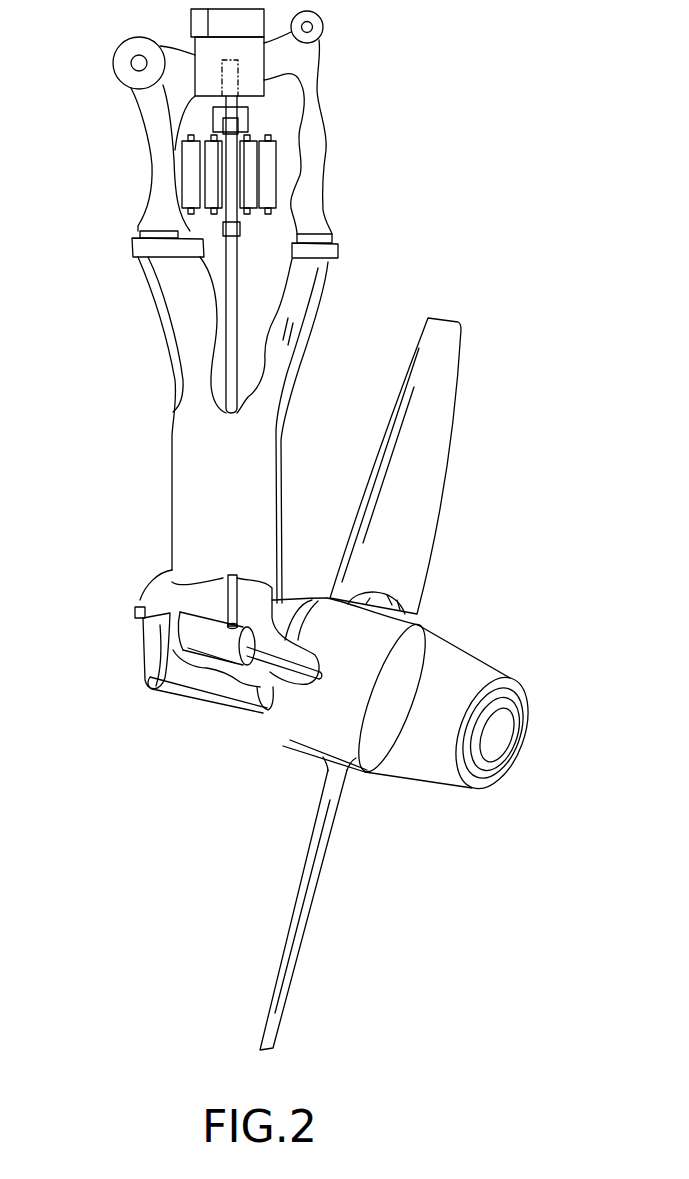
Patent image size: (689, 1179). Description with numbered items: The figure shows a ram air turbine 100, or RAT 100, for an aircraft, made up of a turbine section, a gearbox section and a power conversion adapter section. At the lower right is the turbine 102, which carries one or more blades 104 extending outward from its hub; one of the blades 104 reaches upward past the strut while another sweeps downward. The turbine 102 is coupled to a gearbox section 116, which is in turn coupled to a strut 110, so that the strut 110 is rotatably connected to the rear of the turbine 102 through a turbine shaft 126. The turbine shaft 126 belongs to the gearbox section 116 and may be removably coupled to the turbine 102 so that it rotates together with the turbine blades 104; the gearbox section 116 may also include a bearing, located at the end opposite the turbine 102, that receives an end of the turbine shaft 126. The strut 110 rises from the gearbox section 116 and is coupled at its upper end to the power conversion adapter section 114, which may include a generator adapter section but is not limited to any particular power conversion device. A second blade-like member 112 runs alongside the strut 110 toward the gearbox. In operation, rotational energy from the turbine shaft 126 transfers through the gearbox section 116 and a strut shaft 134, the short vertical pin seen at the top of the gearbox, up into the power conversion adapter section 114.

The ram air turbine 100 is at (461, 123).
The turbine 102 is at (413, 765).
The blades 104 is at (448, 395).
The strut 110 is at (178, 436).
The blade 112 is at (282, 433).
The power conversion adapter section 114 is at (110, 10).
The gearbox section 116 is at (203, 684).
The turbine shaft 126 is at (277, 658).
The strut shaft 134 is at (229, 598).